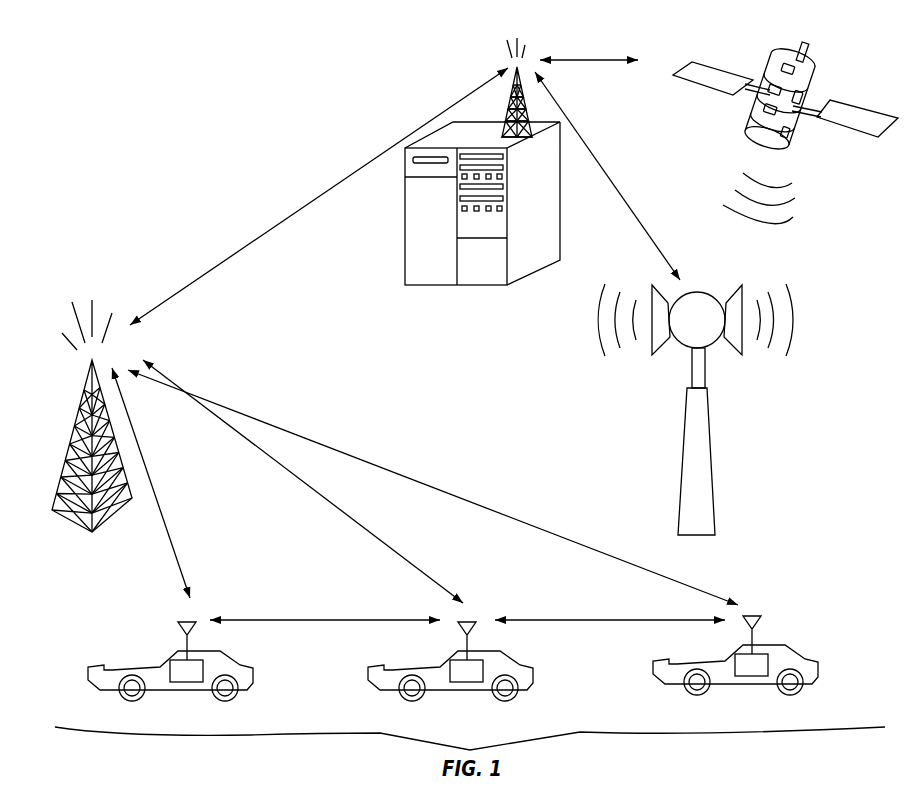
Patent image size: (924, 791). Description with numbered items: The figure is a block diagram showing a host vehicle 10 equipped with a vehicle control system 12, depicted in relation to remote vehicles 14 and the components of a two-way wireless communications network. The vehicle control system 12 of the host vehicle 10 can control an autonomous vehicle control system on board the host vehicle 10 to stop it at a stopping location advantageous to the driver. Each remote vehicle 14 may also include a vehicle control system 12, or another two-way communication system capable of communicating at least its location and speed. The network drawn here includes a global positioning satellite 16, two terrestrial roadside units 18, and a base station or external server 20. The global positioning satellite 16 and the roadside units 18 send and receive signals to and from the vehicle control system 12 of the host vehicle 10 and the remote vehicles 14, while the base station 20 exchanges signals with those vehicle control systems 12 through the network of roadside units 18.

The host vehicle 10 is at (408, 662).
The vehicle control system 12 is at (187, 685).
The remote vehicle 14 is at (162, 660).
The global positioning satellite 16 is at (760, 43).
The roadside unit 18 is at (65, 532).
The base station 20 is at (403, 233).